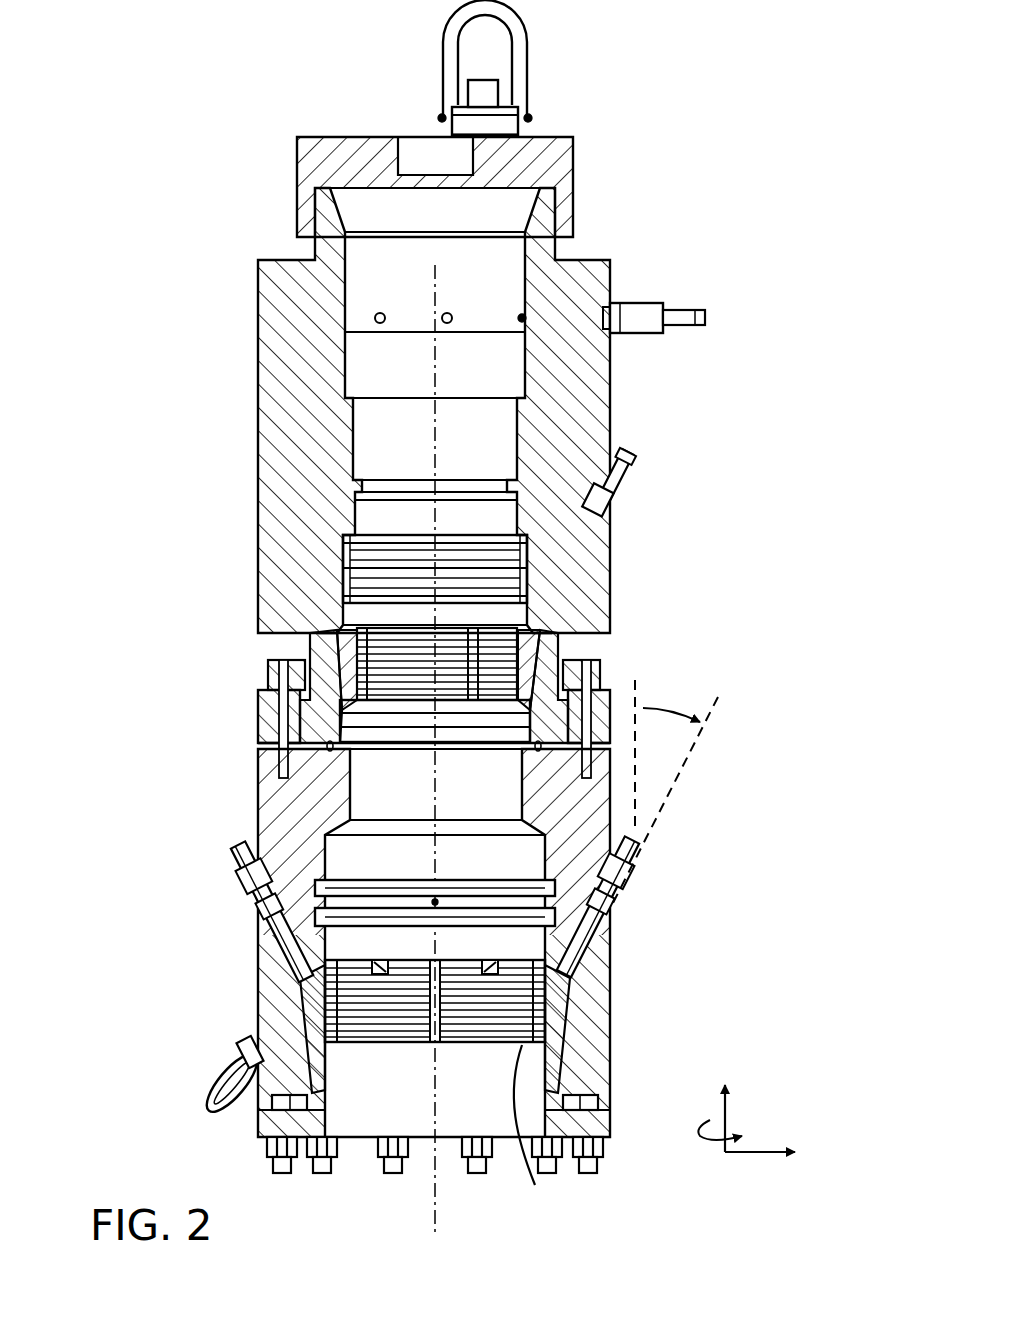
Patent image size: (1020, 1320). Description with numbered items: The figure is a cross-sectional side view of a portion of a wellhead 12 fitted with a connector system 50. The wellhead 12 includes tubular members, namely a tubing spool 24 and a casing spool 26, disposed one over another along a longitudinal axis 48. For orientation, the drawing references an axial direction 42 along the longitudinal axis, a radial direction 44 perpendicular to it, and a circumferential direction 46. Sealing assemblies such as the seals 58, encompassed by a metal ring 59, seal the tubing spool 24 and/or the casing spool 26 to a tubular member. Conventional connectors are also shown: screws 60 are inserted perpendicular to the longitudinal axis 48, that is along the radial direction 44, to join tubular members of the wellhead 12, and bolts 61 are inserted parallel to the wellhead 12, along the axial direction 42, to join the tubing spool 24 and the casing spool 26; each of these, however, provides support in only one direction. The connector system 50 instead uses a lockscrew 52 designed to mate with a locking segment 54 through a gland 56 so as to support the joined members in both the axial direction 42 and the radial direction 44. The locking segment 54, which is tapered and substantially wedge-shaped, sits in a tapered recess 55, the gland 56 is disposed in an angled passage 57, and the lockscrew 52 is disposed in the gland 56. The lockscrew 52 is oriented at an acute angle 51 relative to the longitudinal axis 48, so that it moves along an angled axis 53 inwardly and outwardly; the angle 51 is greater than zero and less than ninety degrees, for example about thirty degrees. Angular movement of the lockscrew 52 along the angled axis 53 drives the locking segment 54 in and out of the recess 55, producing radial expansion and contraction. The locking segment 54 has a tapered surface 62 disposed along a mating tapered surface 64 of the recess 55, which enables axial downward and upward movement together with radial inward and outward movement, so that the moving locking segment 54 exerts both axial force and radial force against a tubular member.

The wellhead 12 is at (670, 128).
The tubing spool 24 is at (600, 405).
The casing spool 26 is at (600, 795).
The axial direction 42 is at (726, 1108).
The radial direction 44 is at (740, 1155).
The circumferential direction 46 is at (705, 1140).
The longitudinal axis 48 is at (435, 1180).
The connector system 50 is at (678, 868).
The acute angle 51 is at (660, 700).
The lockscrew 52 is at (632, 470).
The angled axis 53 is at (692, 752).
The locking segment 54 is at (300, 992).
The recess 55 is at (278, 1012).
The gland 56 is at (618, 508).
The angled passage 57 is at (610, 935).
The seals 58 is at (345, 583).
The metal ring 59 is at (345, 548).
The screws 60 is at (640, 303).
The bolts 61 is at (272, 680).
The tapered surface 62 is at (578, 1017).
The mating tapered surface 64 is at (539, 1129).